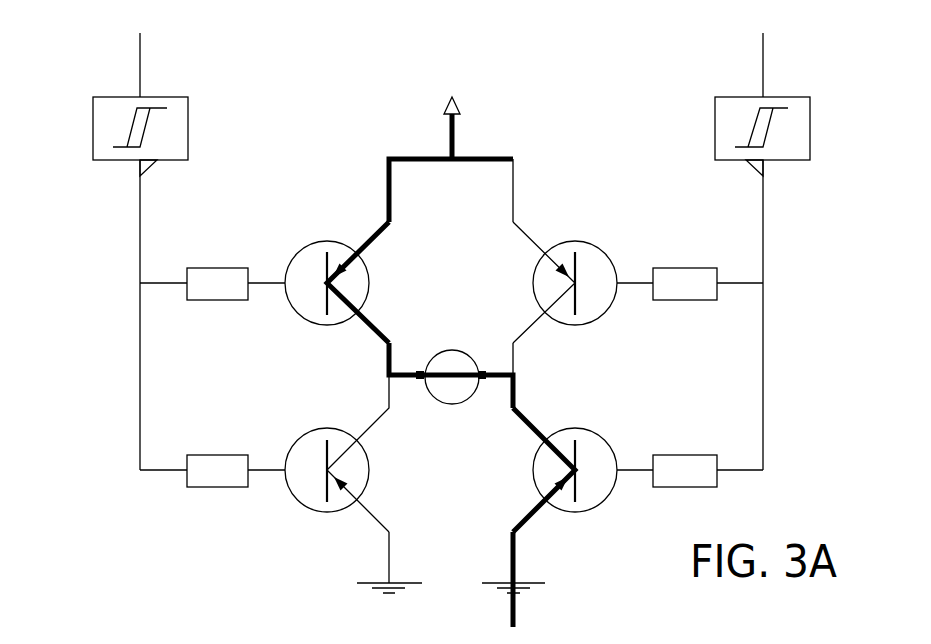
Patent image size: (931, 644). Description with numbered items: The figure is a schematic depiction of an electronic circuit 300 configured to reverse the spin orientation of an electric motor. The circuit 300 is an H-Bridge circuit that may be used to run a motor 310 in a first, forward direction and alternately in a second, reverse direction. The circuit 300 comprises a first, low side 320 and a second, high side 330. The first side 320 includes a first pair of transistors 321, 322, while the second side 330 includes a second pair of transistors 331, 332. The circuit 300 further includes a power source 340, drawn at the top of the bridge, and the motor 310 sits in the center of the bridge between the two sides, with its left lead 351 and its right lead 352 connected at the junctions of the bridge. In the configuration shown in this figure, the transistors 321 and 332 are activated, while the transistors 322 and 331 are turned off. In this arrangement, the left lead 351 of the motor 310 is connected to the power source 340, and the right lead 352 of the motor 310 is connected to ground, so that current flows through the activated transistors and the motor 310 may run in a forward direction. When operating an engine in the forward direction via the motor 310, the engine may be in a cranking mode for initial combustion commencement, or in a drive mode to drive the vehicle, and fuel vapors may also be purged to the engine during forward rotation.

The circuit 300 is at (284, 69).
The motor 310 is at (470, 331).
The first (LO) side 320 is at (81, 69).
The transistor 321 is at (318, 243).
The transistor 322 is at (318, 429).
The second (HI) side 330 is at (814, 69).
The transistor 331 is at (594, 243).
The transistor 332 is at (600, 429).
The power source 340 is at (456, 97).
The left lead 351 is at (418, 378).
The right lead 352 is at (485, 378).